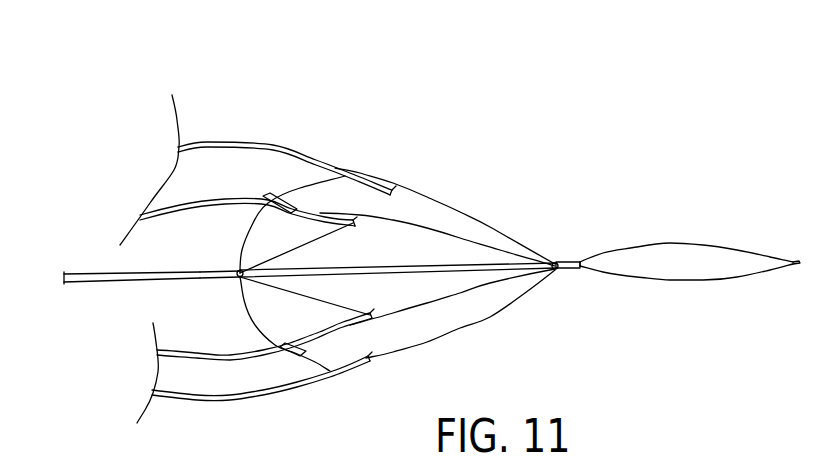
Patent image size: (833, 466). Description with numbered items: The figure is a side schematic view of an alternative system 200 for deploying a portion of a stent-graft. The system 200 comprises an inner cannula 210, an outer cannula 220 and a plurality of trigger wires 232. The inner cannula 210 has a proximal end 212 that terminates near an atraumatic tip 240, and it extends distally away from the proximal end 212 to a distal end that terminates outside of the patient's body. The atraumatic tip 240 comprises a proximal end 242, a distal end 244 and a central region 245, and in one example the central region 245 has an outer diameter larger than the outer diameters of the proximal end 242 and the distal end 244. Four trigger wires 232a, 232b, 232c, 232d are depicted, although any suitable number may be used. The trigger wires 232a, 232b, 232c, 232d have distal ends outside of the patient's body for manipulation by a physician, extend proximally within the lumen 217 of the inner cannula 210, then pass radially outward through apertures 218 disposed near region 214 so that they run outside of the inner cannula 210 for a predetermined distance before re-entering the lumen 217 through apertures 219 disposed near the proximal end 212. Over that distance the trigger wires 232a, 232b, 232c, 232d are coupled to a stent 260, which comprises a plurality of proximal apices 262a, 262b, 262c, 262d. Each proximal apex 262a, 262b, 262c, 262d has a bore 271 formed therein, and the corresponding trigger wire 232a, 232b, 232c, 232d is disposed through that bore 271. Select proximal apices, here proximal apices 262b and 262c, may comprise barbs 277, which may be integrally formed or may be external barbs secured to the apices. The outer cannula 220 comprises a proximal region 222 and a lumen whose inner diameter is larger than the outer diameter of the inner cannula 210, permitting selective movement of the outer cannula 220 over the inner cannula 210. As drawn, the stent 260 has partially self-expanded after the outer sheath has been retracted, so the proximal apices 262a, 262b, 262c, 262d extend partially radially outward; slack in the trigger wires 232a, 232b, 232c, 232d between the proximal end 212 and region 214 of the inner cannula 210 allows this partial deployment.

The system 200 is at (128, 110).
The stent 260 is at (248, 120).
The first proximal apex 262a is at (343, 168).
The proximal apex 262b is at (303, 200).
The proximal apex 262c is at (230, 350).
The proximal apex 262d is at (270, 397).
The bore 271 is at (395, 185).
The barb 277 is at (270, 199).
The aperture 218 is at (275, 257).
The lumen 217 is at (263, 286).
The outer cannula 220 is at (92, 272).
The proximal region 222 is at (220, 279).
The region 214 is at (230, 270).
The inner cannula 210 is at (380, 266).
The proximal end 212 is at (580, 261).
The aperture 219 is at (550, 272).
The trigger wire 232 is at (452, 193).
The trigger wire 232a is at (485, 218).
The trigger wire 232b is at (512, 254).
The trigger wire 232c is at (507, 280).
The trigger wire 232d is at (480, 325).
The atraumatic tip 240 is at (688, 241).
The proximal end 242 is at (793, 266).
The distal end 244 is at (588, 271).
The central region 245 is at (680, 282).